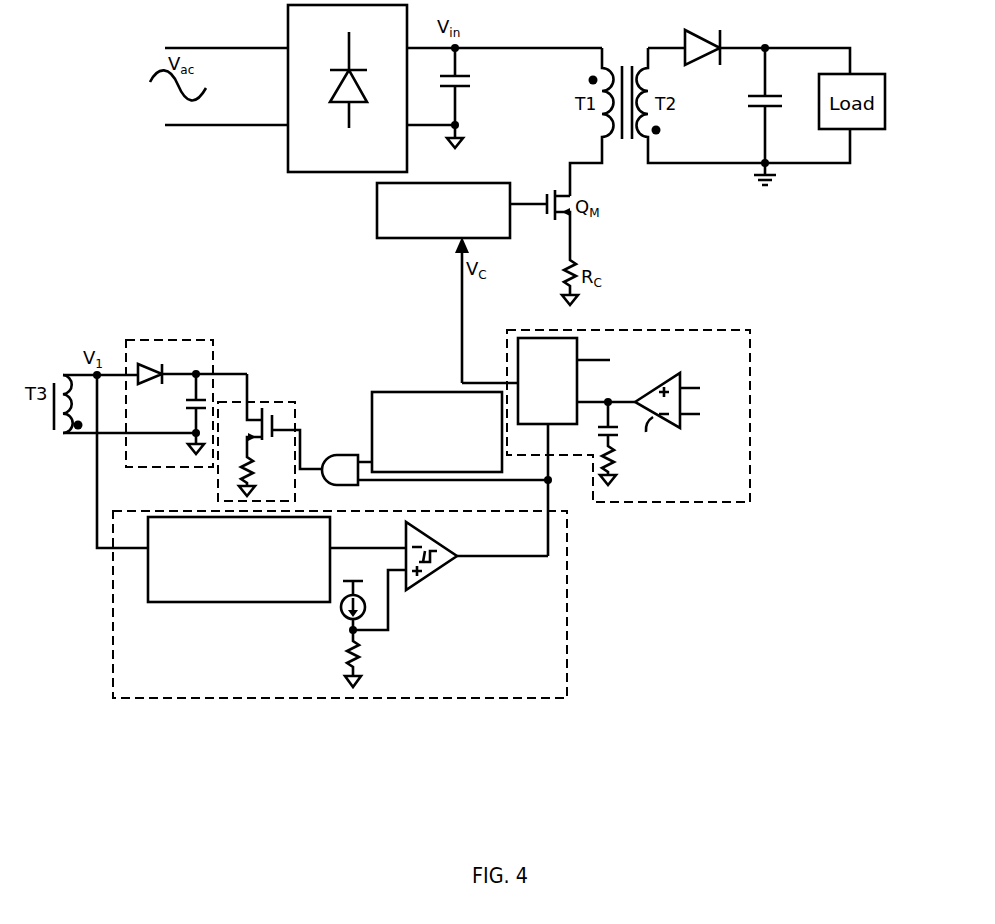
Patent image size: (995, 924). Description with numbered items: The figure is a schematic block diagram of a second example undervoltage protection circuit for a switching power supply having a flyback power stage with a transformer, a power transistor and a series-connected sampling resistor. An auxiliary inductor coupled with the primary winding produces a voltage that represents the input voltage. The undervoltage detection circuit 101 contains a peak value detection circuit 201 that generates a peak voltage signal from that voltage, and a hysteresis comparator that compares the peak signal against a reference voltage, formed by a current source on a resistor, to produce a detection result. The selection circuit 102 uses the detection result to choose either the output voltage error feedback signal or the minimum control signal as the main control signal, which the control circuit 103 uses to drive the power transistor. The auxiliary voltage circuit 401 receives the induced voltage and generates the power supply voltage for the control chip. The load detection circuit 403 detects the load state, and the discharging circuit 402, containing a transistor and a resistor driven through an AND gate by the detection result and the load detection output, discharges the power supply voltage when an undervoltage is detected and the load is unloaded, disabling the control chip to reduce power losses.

The undervoltage detection circuit 101 is at (340, 604).
The selection circuit 102 is at (741, 499).
The control circuit 103 is at (495, 226).
The peak value detection circuit 201 is at (257, 597).
The auxiliary voltage circuit 401 is at (168, 464).
The discharging circuit 402 is at (290, 500).
The load detection circuit 403 is at (488, 469).